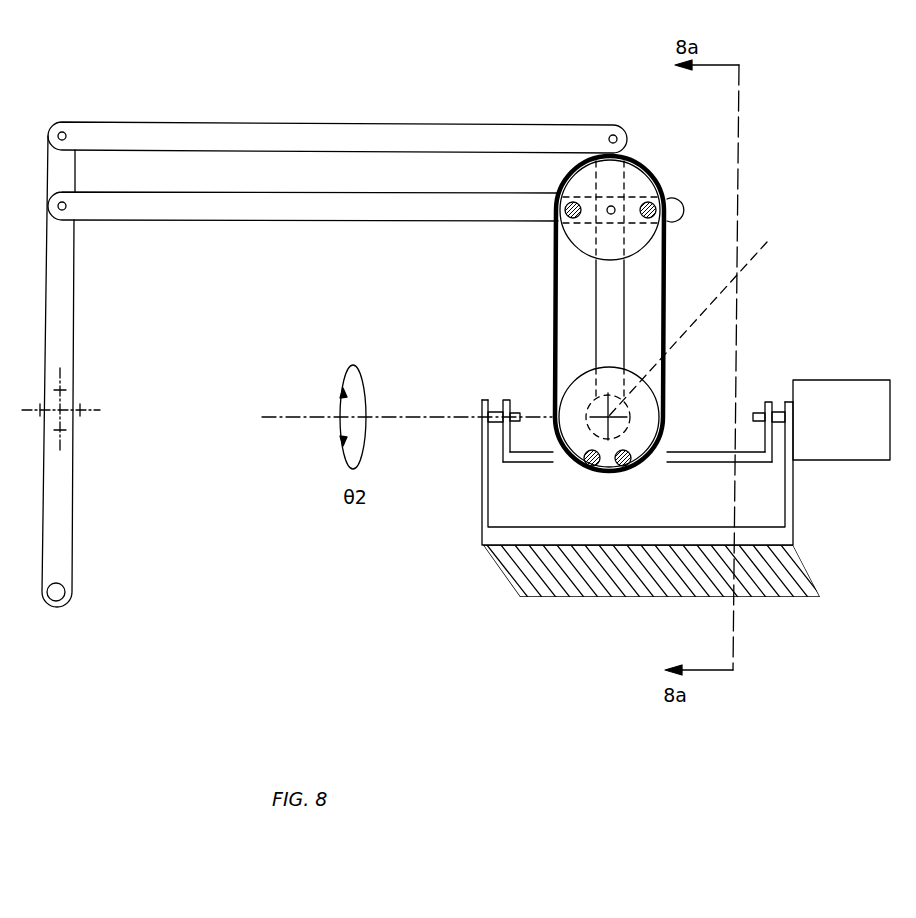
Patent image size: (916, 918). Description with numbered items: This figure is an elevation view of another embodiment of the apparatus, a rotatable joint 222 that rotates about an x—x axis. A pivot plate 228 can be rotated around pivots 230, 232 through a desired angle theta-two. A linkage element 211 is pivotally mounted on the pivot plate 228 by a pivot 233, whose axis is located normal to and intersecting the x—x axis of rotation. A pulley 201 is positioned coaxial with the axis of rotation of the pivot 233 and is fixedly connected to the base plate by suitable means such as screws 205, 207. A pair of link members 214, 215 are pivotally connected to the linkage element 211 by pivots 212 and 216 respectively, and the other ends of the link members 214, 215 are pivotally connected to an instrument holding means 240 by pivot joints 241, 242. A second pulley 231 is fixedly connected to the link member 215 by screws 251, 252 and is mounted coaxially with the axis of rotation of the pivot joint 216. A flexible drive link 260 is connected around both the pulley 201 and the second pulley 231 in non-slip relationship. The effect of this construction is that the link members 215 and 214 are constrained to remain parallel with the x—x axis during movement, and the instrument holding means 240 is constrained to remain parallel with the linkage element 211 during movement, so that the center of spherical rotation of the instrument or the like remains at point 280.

The pulley 201 is at (564, 393).
The screw 205 is at (472, 539).
The screw 207 is at (522, 561).
The linkage element 211 is at (512, 313).
The pivot 212 is at (564, 102).
The link member 214 is at (337, 107).
The link member 215 is at (303, 230).
The pivot 216 is at (721, 136).
The rotatable joint 222 is at (327, 561).
The pivot plate 228 is at (650, 542).
The pivot 230 is at (834, 396).
The second pulley 231 is at (555, 219).
The pivot 232 is at (607, 408).
The pivot 233 is at (773, 242).
The instrument holding means 240 is at (114, 371).
The pivot joint 241 is at (103, 96).
The pivot joint 242 is at (113, 235).
The screw 251 is at (546, 191).
The screw 252 is at (747, 174).
The flexible drive link 260 is at (691, 313).
The point 280 is at (100, 415).